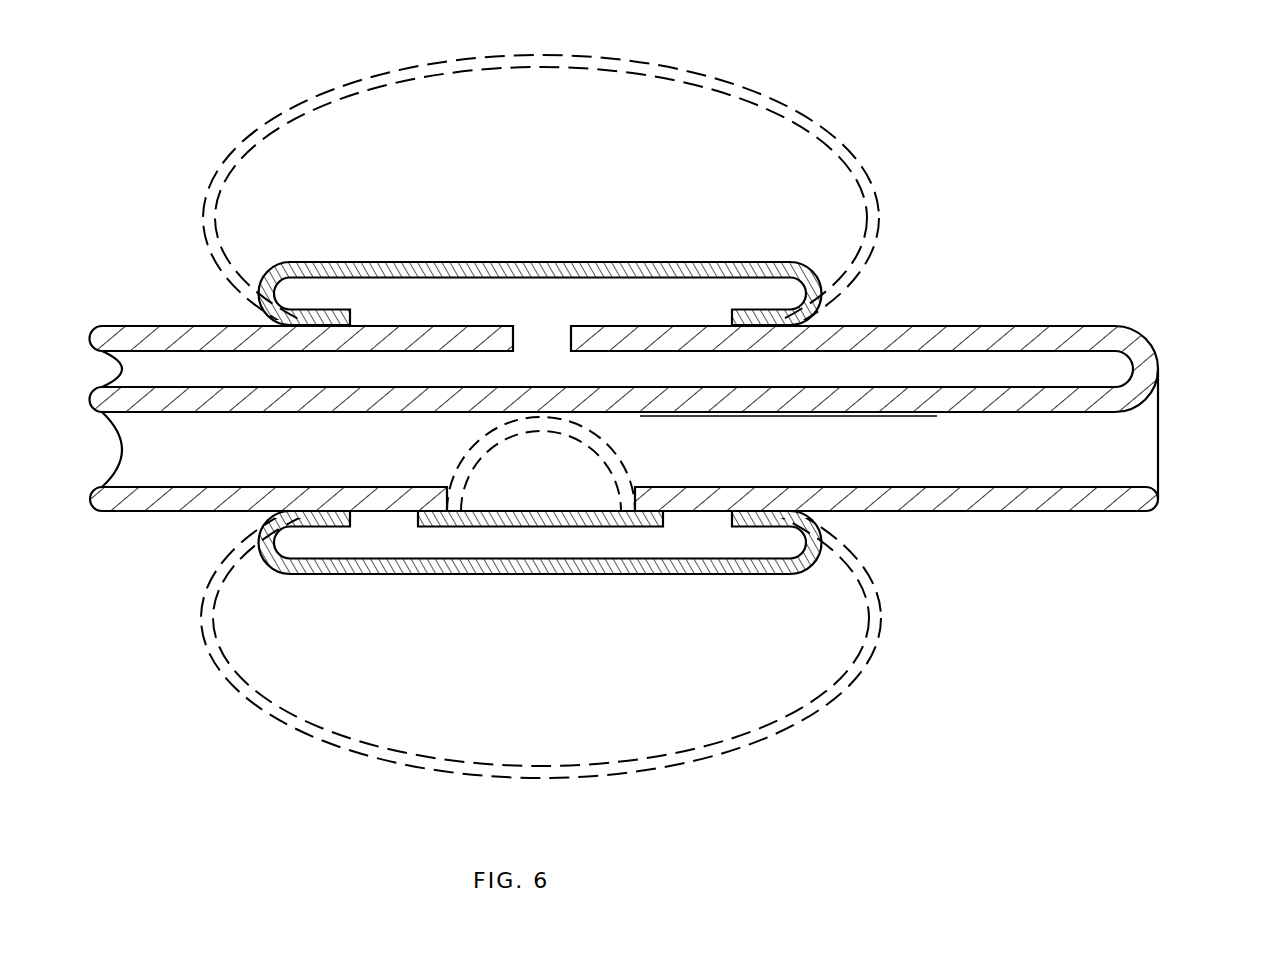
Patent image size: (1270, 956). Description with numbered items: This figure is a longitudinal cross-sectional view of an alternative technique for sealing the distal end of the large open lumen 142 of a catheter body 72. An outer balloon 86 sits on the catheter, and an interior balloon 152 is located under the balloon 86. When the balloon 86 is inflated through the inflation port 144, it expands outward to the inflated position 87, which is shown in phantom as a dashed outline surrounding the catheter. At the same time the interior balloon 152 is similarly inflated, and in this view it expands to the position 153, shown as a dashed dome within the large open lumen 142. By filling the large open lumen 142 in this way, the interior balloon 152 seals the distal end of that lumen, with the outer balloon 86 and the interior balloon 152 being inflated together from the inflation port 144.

The tubular body 72 is at (680, 387).
The balloon 86 is at (810, 263).
The inflated position of balloon 87 is at (803, 115).
The large open lumen 142 is at (1123, 448).
The inflation port 144 is at (1097, 360).
The interior balloon 152 is at (513, 527).
The expanded position of interior balloon 153 is at (610, 480).